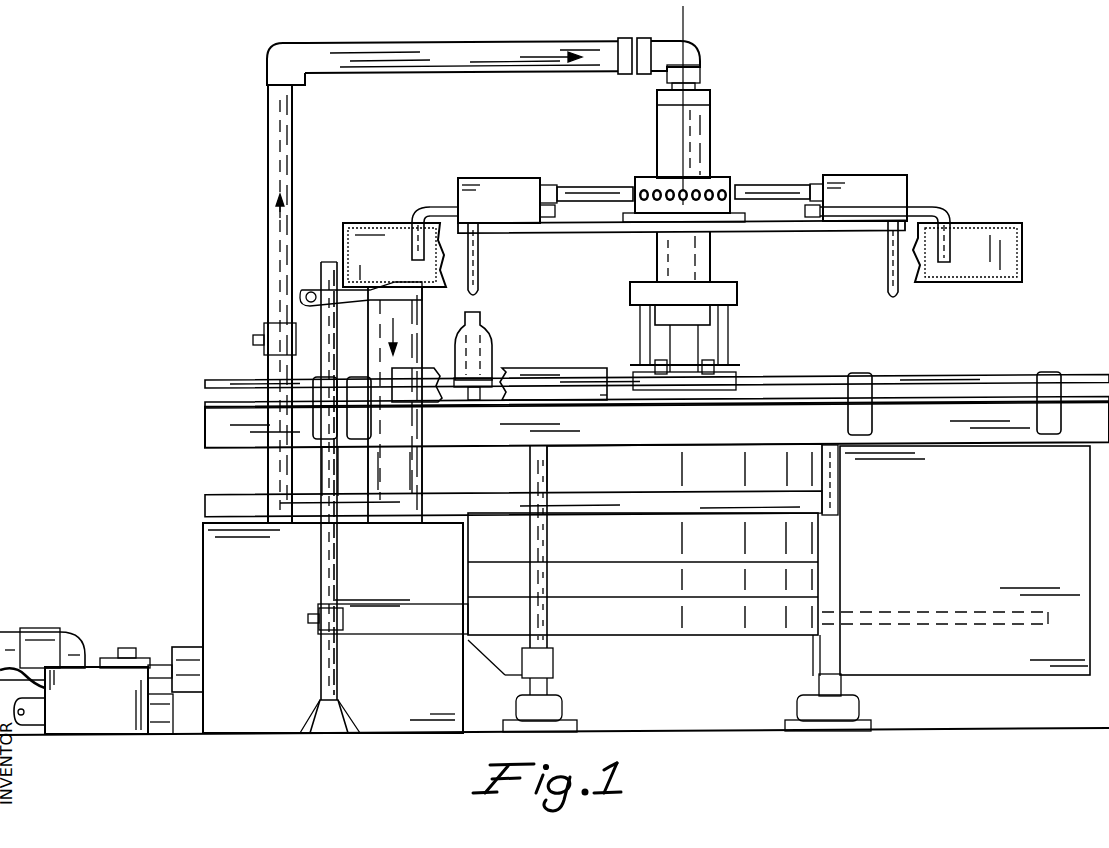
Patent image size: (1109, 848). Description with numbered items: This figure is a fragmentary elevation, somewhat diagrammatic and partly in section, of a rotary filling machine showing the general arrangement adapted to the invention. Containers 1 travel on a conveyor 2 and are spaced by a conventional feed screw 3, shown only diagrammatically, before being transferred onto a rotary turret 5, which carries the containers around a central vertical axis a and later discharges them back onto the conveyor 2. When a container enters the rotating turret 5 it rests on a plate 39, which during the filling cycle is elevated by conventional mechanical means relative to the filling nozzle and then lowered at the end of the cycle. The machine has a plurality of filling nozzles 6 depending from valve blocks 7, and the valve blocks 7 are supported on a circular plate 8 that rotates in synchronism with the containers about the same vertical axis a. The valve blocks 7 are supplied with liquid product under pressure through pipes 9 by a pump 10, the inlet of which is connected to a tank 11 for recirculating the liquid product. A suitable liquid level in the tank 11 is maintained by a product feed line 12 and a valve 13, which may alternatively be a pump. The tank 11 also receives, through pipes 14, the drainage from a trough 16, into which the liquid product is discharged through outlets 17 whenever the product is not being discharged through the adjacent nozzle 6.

The central vertical axis a is at (690, 30).
The container 1 is at (484, 333).
The conveyor 2 is at (215, 393).
The feed screw 3 is at (418, 404).
The rotary turret 5 is at (718, 262).
The filling nozzle 6 is at (478, 280).
The valve block 7 is at (510, 212).
The circular plate 8 is at (555, 231).
The pipe 9 is at (433, 72).
The pump 10 is at (188, 650).
The tank 11 is at (275, 646).
The product feed line 12 is at (33, 725).
The valve 13 is at (105, 715).
The pipe 14 is at (404, 308).
The trough 16 is at (342, 245).
The outlet 17 is at (408, 244).
The plate 39 is at (488, 370).